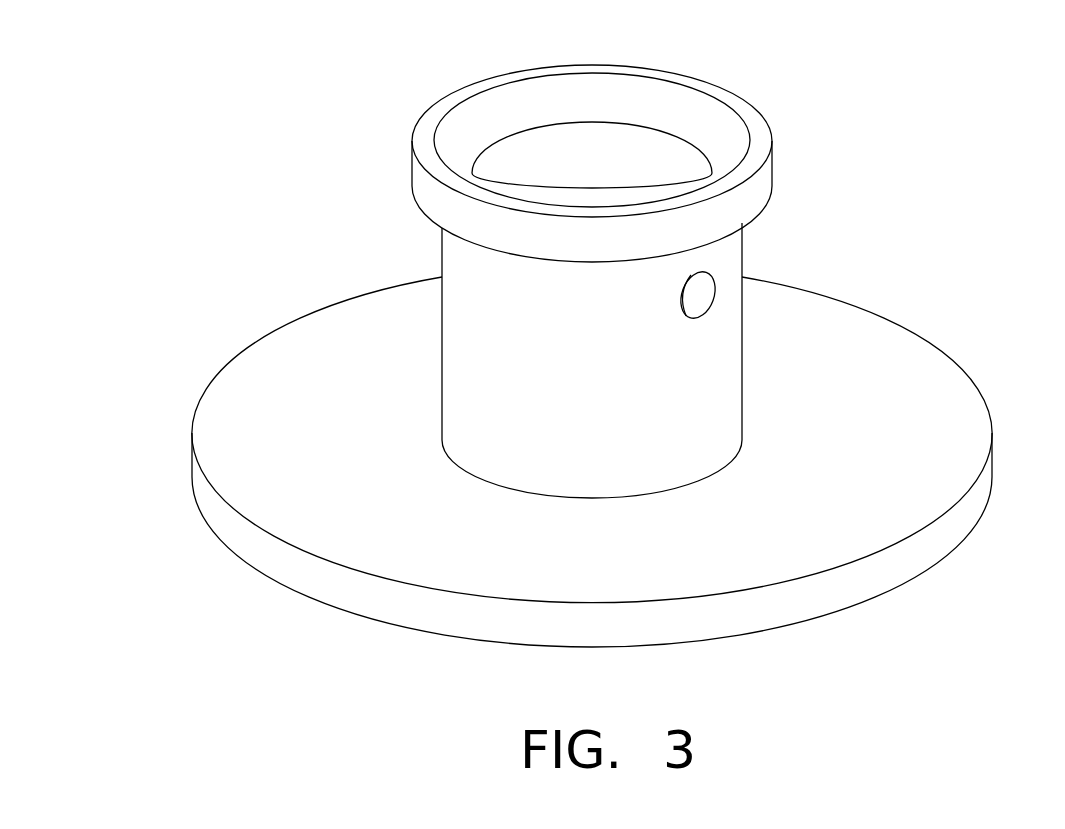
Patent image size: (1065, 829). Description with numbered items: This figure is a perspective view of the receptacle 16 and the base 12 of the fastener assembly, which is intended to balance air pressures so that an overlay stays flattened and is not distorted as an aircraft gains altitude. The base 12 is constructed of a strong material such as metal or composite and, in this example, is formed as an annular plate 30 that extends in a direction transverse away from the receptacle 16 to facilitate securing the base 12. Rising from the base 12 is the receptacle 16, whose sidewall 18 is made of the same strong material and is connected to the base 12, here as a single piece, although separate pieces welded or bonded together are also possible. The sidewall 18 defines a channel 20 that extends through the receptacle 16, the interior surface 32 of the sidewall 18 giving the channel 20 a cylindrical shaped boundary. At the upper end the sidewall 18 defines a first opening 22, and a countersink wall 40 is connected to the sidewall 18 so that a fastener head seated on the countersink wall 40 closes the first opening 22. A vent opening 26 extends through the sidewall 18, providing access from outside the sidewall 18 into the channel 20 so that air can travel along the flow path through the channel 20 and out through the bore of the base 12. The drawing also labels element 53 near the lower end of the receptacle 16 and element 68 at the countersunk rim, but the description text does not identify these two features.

The base 12 is at (623, 485).
The receptacle 16 is at (626, 274).
The sidewall 18 is at (626, 374).
The channel 20 is at (655, 105).
The first opening 22 is at (562, 122).
The vent opening 26 is at (712, 296).
The annular plate 30 is at (663, 543).
The interior surface 32 is at (614, 105).
The countersink wall 40 is at (737, 152).
The lower end of tubular body 53 is at (505, 440).
The flange 68 is at (603, 142).